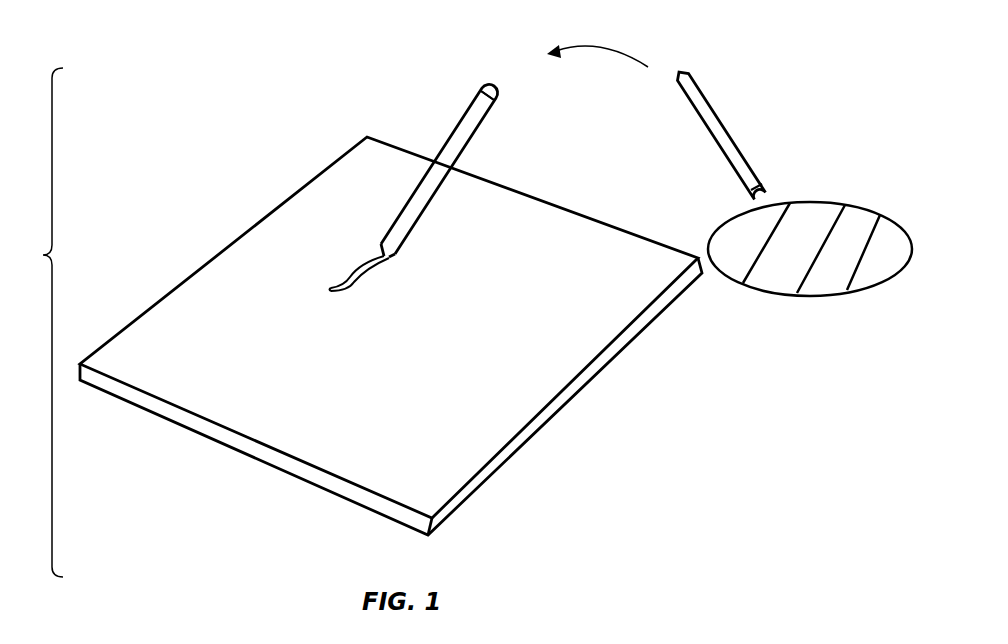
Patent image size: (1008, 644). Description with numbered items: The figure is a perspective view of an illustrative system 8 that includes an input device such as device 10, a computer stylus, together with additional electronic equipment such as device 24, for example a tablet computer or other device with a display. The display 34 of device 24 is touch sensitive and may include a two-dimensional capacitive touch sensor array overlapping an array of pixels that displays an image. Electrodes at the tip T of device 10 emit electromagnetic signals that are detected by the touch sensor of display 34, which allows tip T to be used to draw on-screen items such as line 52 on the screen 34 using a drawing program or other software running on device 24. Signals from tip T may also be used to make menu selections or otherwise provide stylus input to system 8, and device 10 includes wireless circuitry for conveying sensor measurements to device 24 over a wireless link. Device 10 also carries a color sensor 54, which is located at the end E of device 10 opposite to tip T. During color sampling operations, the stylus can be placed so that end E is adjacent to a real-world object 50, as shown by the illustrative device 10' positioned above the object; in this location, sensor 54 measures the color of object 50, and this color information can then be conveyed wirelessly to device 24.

The system 8 is at (34, 322).
The device 10 is at (439, 162).
The device 10' is at (731, 136).
The device 24 is at (520, 450).
The display 34 is at (580, 340).
The real-world object 50 is at (817, 296).
The line 52 is at (355, 268).
The color sensor 54 is at (498, 92).
The tip T is at (368, 235).
The end E is at (470, 62).